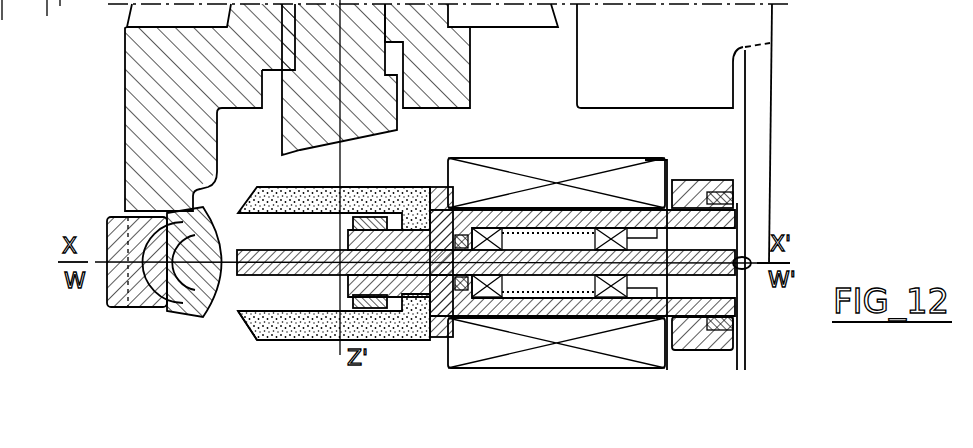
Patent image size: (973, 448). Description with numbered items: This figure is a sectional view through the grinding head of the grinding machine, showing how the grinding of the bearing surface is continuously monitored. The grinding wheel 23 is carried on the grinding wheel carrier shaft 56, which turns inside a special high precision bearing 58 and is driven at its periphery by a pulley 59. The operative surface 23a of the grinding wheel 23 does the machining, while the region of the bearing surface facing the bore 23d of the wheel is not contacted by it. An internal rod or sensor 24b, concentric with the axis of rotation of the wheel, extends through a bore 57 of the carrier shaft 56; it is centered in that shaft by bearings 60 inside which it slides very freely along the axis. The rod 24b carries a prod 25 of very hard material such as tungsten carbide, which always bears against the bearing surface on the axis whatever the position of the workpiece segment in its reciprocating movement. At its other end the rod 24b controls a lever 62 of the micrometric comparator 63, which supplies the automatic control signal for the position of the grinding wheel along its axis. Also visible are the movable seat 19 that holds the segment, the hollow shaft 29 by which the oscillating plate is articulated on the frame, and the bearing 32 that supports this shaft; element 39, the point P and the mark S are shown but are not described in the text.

The movable seat 19 is at (147, 313).
The grinding wheel 23 is at (317, 343).
The operative surface of the grinding wheel 23a is at (250, 333).
The bore of the grinding wheel 23d is at (243, 296).
The internal rod or sensor 24b is at (567, 262).
The prod 25 is at (243, 241).
The hollow shaft 29 is at (268, 17).
The bearing 32 is at (128, 7).
The housing insert 39 is at (398, 42).
The grinding wheel carrier shaft 56 is at (409, 338).
The bore of the grinding wheel carrier shaft 57 is at (403, 250).
The high precision bearing 58 is at (510, 158).
The pulley 59 is at (718, 355).
The bearings 60 is at (495, 318).
The lever 62 is at (743, 160).
The micrometric comparator 63 is at (645, 110).
The point P is at (289, 292).
The gap S is at (330, 240).